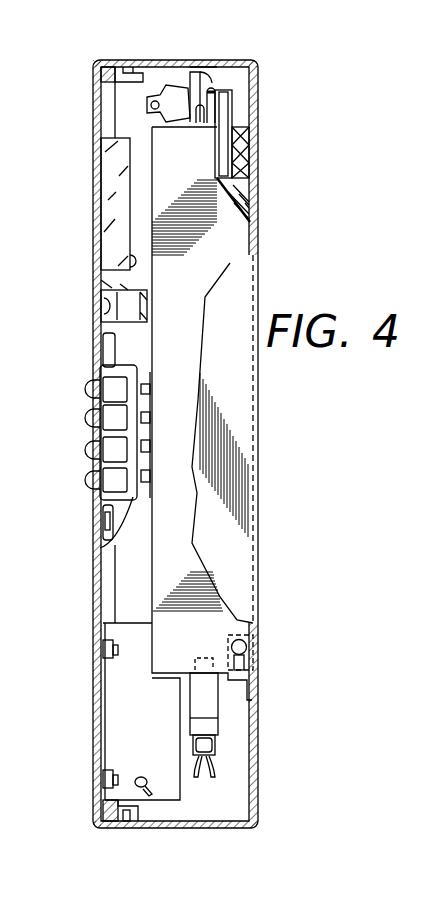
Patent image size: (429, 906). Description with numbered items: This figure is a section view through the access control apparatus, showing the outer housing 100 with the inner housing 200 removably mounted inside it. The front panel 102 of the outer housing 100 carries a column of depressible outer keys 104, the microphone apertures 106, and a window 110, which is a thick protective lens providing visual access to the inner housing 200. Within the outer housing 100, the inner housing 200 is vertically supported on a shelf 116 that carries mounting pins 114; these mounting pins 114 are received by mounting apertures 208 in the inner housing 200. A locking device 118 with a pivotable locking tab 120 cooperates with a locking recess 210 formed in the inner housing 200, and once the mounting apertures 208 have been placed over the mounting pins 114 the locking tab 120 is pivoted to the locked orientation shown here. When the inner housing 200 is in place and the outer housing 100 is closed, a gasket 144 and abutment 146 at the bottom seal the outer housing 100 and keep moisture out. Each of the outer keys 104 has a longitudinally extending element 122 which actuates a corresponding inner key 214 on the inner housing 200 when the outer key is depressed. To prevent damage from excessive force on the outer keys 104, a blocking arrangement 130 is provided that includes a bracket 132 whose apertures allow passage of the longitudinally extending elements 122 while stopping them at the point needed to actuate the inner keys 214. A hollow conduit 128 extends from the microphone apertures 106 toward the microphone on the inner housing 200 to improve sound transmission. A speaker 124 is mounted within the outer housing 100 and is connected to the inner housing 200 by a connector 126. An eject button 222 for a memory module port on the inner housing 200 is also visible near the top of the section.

The outer housing 100 is at (88, 60).
The front panel 102 is at (100, 645).
The depressible outer keys 104 is at (64, 436).
The microphone apertures 106 is at (98, 308).
The window 110 is at (105, 198).
The mounting pins 114 is at (248, 666).
The shelf 116 is at (230, 88).
The locking device 118 is at (213, 63).
The pivotable locking tab 120 is at (231, 146).
The longitudinally extending element 122 is at (147, 377).
The speaker 124 is at (175, 797).
The connector 126 is at (213, 728).
The hollow conduit 128 is at (140, 290).
The blocking arrangement 130 is at (131, 356).
The bracket 132 is at (112, 538).
The gasket 144 is at (103, 822).
The abutment 146 is at (124, 826).
The inner housing 200 is at (234, 248).
The mounting apertures 208 is at (247, 650).
The locking recess 210 is at (233, 168).
The inner keys 214 is at (155, 449).
The eject button 222 is at (230, 110).